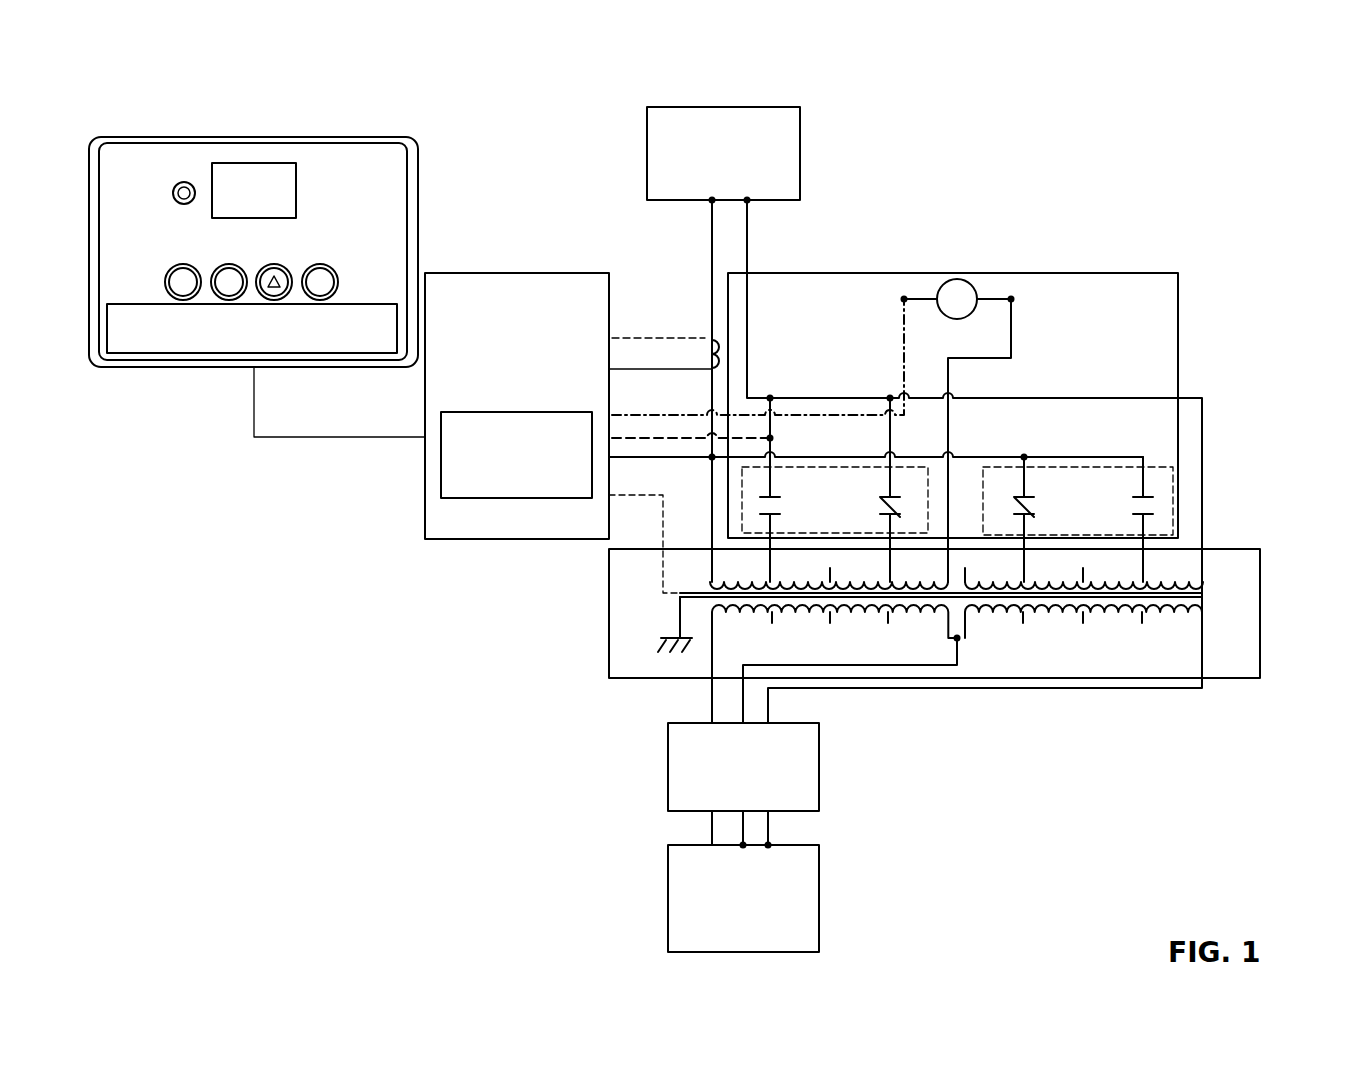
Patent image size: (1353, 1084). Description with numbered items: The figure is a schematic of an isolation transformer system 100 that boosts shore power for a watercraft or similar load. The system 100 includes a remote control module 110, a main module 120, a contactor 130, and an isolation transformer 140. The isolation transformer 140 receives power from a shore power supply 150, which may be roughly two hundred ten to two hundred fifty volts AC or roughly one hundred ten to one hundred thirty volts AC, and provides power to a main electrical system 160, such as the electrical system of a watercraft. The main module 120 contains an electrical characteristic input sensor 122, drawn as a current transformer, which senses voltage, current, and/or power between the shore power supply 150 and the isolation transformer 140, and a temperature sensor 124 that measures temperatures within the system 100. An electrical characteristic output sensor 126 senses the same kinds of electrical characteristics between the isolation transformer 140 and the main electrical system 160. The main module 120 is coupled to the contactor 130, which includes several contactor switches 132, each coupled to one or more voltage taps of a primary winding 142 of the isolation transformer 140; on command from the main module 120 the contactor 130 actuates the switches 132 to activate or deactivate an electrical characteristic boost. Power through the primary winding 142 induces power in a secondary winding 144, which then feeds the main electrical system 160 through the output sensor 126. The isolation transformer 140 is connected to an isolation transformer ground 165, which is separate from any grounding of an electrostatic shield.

The isolation transformer system 100 is at (163, 76).
The remote control module 110 is at (157, 137).
The main module 120 is at (490, 273).
The electrical characteristic input sensor 122 is at (612, 347).
The temperature sensor 124 is at (508, 412).
The electrical characteristic output sensor 126 is at (668, 768).
The contactor 130 is at (1112, 273).
The contactor switches 132 is at (775, 498).
The isolation transformer 140 is at (675, 680).
The primary winding 142 is at (1203, 583).
The secondary winding 144 is at (1163, 605).
The shore power supply 150 is at (707, 107).
The main electrical system 160 is at (668, 902).
The isolation transformer ground 165 is at (641, 637).